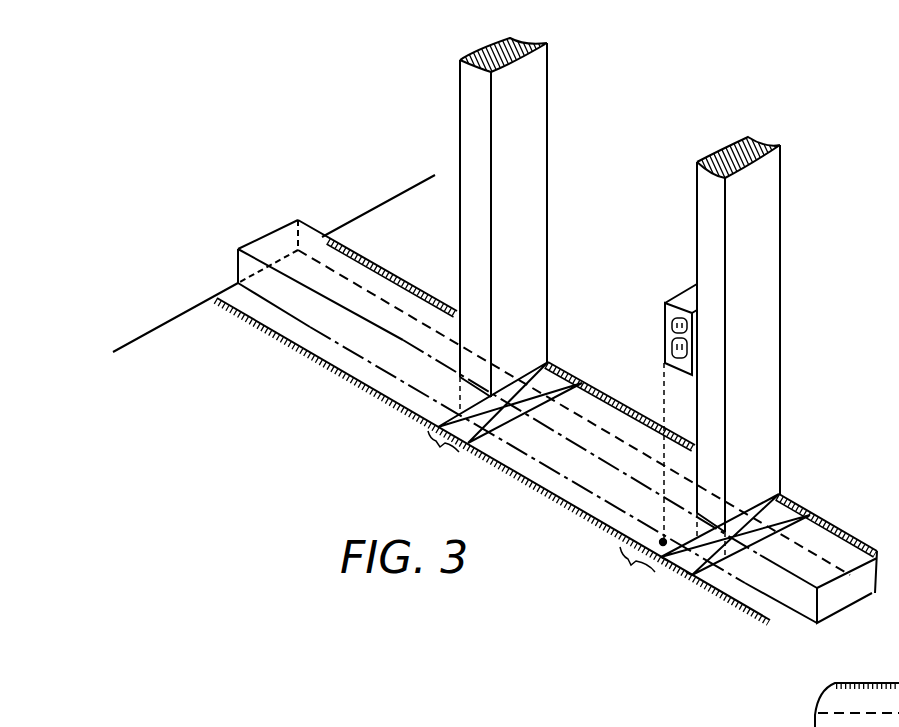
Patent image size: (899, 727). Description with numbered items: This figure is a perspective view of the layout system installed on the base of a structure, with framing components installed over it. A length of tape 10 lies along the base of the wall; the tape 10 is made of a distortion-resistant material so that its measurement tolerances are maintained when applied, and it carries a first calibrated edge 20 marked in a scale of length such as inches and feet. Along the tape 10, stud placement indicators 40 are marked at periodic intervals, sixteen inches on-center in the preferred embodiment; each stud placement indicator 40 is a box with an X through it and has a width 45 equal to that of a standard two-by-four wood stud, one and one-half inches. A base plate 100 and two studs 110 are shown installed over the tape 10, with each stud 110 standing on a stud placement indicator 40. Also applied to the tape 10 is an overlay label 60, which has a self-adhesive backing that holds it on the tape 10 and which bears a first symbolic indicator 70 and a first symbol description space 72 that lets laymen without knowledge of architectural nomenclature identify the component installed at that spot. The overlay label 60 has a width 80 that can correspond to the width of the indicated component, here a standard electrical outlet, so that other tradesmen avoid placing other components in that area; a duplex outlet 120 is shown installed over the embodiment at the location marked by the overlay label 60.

The tape 10 is at (343, 417).
The first calibrated edge 20 is at (302, 350).
The stud placement indicator 40 is at (487, 443).
The width 45 is at (429, 457).
The overlay label 60 is at (662, 541).
The first symbolic indicator 70 is at (688, 578).
The first symbol description space 72 is at (667, 566).
The width 80 is at (623, 574).
The base plate 100 is at (278, 231).
The stud 110 is at (697, 246).
The duplex outlet 120 is at (665, 326).